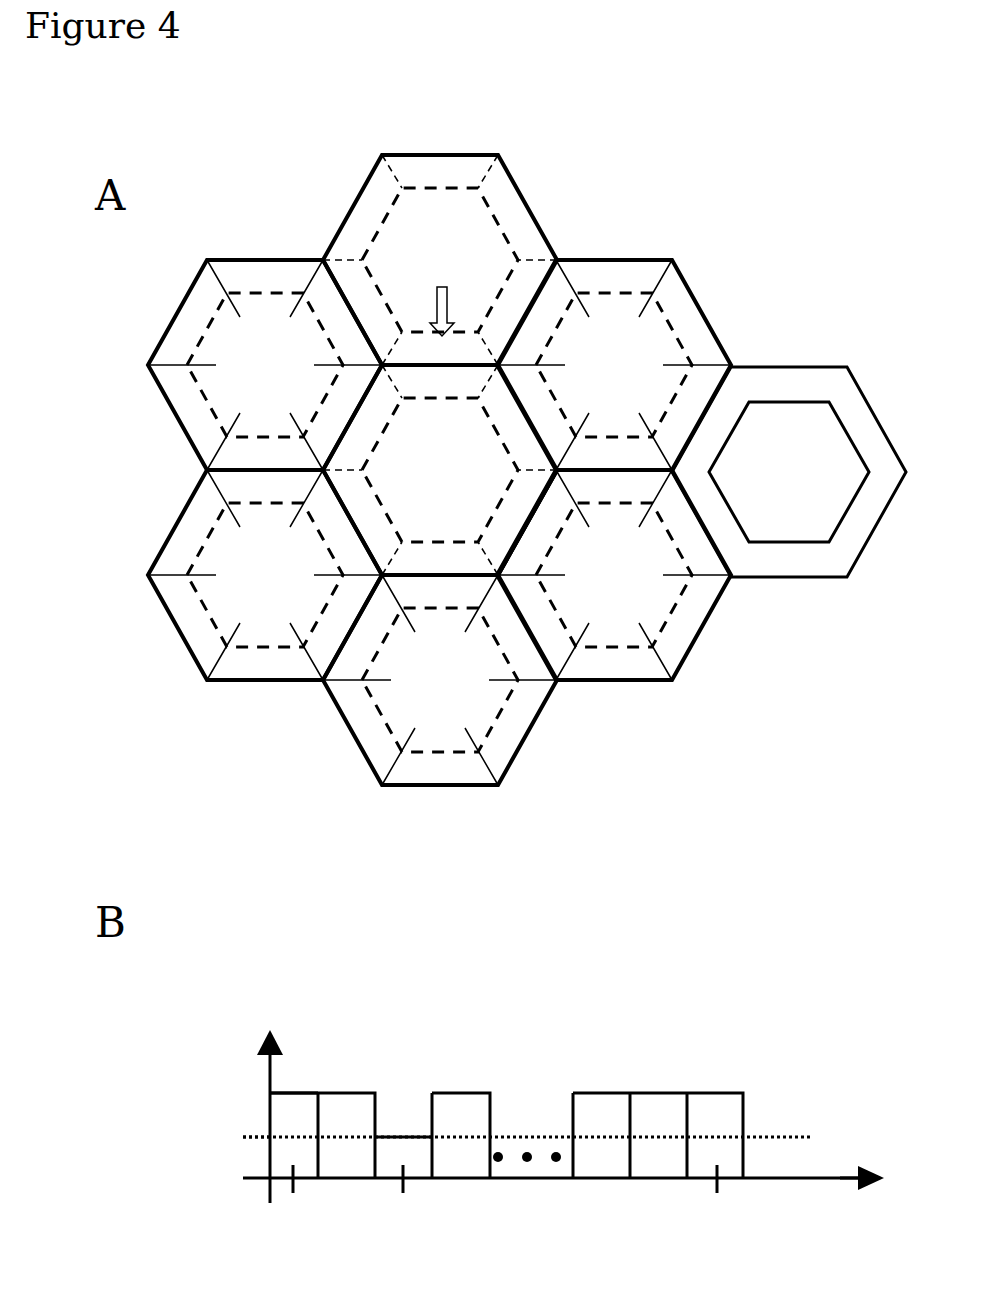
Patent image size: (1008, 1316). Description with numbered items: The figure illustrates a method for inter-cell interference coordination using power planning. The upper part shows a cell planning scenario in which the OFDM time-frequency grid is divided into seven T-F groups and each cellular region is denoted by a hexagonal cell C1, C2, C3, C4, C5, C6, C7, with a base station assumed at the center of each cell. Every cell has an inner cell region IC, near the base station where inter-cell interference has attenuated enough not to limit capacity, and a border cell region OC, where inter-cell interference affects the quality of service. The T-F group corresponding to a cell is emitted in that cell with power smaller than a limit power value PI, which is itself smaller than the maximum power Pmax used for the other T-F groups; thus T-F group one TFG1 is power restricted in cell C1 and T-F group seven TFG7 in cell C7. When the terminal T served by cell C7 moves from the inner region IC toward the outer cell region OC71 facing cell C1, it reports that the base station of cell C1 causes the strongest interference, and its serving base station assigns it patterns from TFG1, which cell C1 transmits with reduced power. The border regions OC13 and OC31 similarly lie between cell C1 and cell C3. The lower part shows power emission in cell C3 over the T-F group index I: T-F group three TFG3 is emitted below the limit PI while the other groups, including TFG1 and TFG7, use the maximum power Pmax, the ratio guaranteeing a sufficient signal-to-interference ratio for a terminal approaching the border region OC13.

The cell one C1 is at (440, 470).
The cell two C2 is at (614, 365).
The cell three C3 is at (614, 575).
The cell four C4 is at (440, 680).
The cell five C5 is at (265, 575).
The cell six C6 is at (265, 365).
The cell seven C7 is at (440, 260).
The inner cell region IC is at (527, 417).
The border cell region OC is at (569, 668).
The outer cell region of cell seven toward cell one OC71 is at (440, 354).
The border region of cell one toward cell three OC13 is at (527, 522).
The border region of cell three toward cell one OC31 is at (530, 522).
The terminal T is at (442, 297).
The maximum power Pmax is at (237, 1087).
The limit power value PI is at (240, 1140).
The T-F group index I is at (840, 1197).
The T-F group one TFG1 is at (306, 1208).
The T-F group three TFG3 is at (414, 1208).
The T-F group seven TFG7 is at (712, 1208).